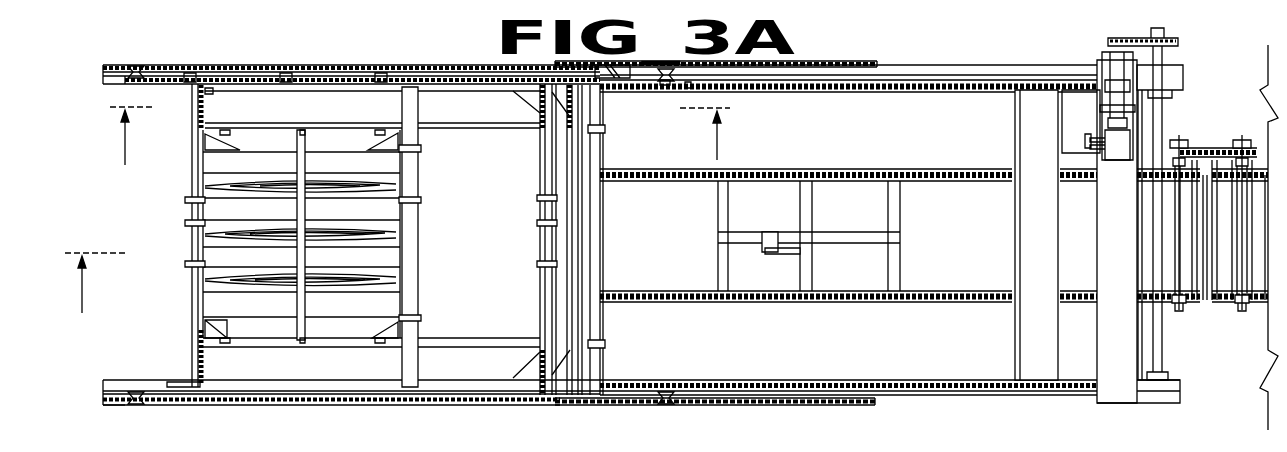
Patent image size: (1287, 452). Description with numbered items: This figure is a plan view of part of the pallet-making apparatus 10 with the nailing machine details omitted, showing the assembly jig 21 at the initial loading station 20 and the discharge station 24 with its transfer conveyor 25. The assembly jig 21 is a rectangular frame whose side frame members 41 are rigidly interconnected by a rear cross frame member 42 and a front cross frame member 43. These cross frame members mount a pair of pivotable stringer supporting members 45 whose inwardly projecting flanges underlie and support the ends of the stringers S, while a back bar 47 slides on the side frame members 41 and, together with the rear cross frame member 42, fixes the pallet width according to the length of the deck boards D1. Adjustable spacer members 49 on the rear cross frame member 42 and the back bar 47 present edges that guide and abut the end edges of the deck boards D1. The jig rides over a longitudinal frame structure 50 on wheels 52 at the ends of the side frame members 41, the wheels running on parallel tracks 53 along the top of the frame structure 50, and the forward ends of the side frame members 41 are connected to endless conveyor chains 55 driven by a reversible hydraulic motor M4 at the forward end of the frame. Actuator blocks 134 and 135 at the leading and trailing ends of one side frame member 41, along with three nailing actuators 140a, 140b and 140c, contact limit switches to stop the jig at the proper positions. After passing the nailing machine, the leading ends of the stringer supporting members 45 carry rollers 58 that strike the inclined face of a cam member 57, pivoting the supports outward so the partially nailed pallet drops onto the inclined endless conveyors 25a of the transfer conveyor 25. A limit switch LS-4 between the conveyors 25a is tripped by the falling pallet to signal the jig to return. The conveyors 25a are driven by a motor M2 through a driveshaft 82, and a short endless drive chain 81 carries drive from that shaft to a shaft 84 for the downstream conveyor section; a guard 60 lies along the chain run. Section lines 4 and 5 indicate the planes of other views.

The lumber stacking apparatus 10 is at (98, 45).
The initial loading station 20 is at (108, 348).
The assembly jig 21 is at (188, 310).
The discharge station 24 is at (918, 116).
The transfer conveyor 25 is at (905, 166).
The endless conveyors 25a is at (948, 290).
The side frame members 41 is at (352, 84).
The rear cross frame member 42 is at (198, 170).
The front cross frame member 43 is at (540, 292).
The stringer supporting members 45 is at (480, 130).
The back bar 47 is at (421, 167).
The spacer members 49 is at (185, 223).
The frame structure 50 is at (103, 88).
The wheels 52 is at (137, 66).
The tracks 53 is at (103, 67).
The endless conveyor chains 55 is at (860, 90).
The cam member 57 is at (1014, 333).
The roller 58 is at (600, 130).
The chain guard 60 is at (846, 65).
The endless drive chain 81 is at (1210, 148).
The driveshaft 82 is at (1186, 302).
The shaft 84 is at (1249, 302).
The actuator block 134 is at (662, 82).
The actuator block 135 is at (212, 93).
The nailing actuator 140a is at (381, 73).
The nailing actuator 140b is at (286, 73).
The nailing actuator 140c is at (190, 73).
The deck boards D1 is at (382, 152).
The stringers S is at (290, 210).
The limit switch LS-4 is at (772, 232).
The motor M2 is at (1077, 95).
The reversible hydraulic motor M4 is at (1118, 160).
The section line 4 is at (95, 283).
The section line 5 is at (418, 136).